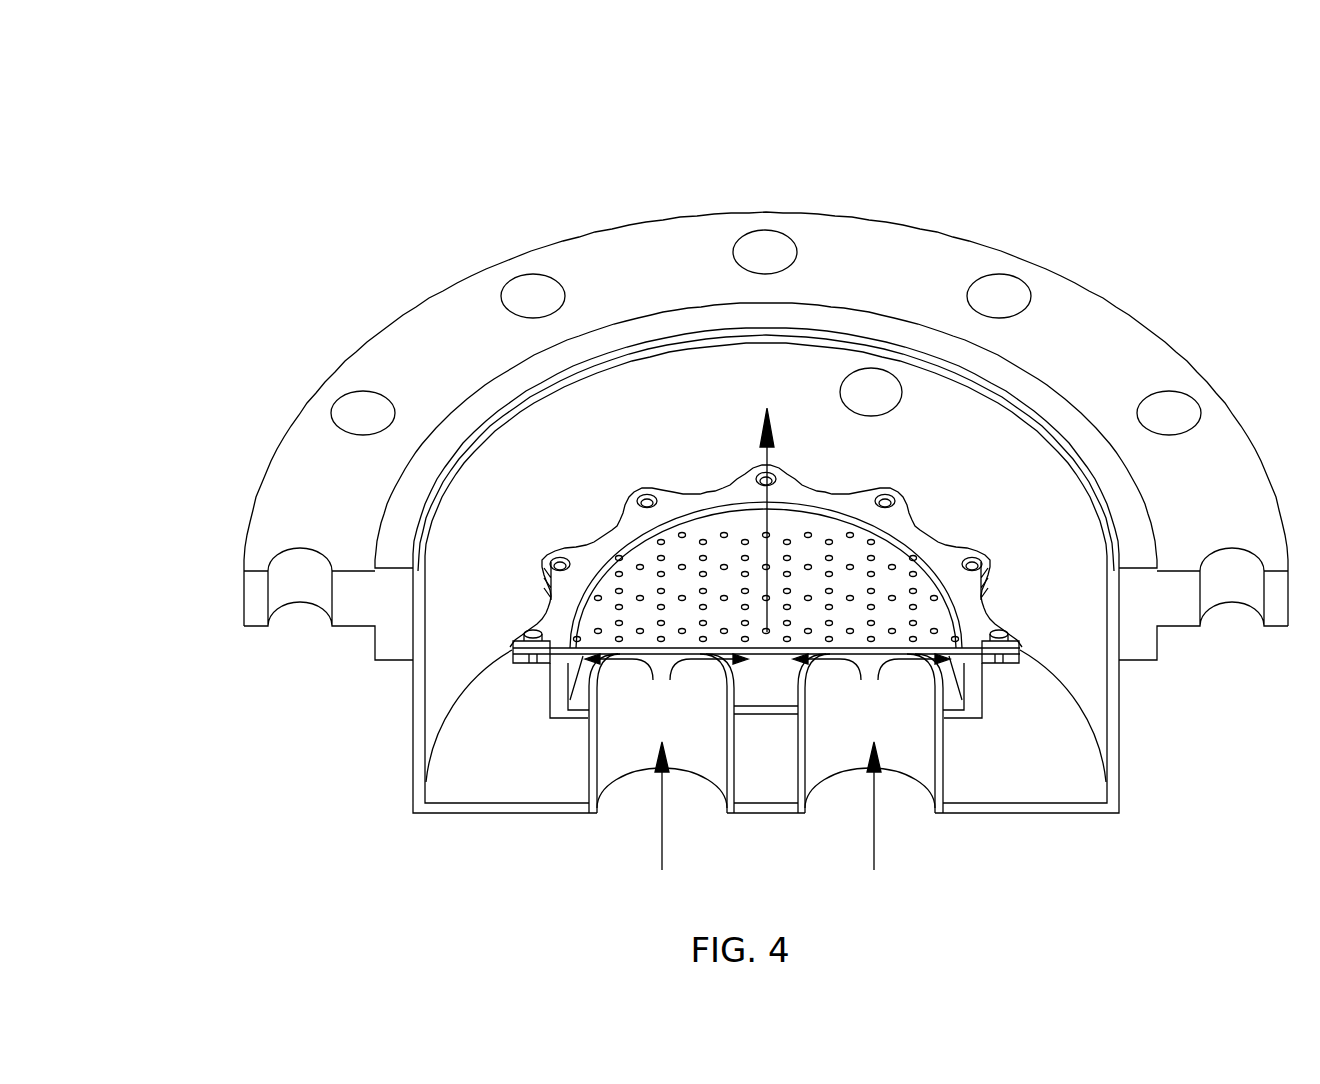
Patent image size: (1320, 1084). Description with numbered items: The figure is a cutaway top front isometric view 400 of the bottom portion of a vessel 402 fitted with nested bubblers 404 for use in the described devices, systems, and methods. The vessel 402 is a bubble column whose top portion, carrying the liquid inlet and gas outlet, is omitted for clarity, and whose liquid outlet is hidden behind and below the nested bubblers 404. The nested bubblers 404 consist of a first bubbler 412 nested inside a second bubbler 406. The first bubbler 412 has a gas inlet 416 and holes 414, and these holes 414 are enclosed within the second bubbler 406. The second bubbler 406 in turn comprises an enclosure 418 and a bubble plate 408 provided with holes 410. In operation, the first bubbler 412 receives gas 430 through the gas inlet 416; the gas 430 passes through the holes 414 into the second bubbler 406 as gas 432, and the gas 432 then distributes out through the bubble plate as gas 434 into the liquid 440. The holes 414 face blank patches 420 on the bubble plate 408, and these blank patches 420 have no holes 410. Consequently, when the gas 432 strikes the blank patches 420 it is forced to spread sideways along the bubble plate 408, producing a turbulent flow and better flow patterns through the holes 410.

The cutaway top front isometric view 400 is at (210, 107).
The vessel 402 is at (401, 314).
The nested bubblers 404 is at (640, 487).
The second bubbler 406 is at (563, 685).
The bubble plate 408 is at (627, 562).
The holes 410 is at (684, 530).
The first bubbler 412 is at (802, 700).
The holes 414 is at (617, 682).
The gas inlet 416 is at (593, 773).
The enclosure 418 is at (958, 688).
The blank patches 420 is at (667, 630).
The gas 430 is at (769, 821).
The gas 432 is at (767, 683).
The gas 434 is at (764, 504).
The liquid 440 is at (871, 392).